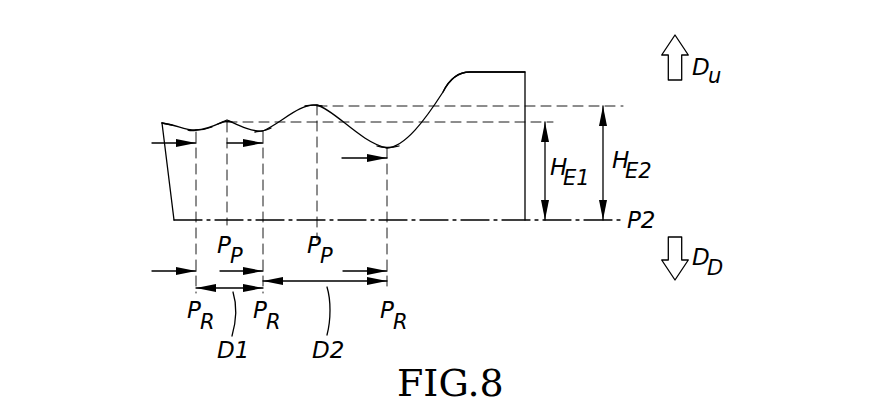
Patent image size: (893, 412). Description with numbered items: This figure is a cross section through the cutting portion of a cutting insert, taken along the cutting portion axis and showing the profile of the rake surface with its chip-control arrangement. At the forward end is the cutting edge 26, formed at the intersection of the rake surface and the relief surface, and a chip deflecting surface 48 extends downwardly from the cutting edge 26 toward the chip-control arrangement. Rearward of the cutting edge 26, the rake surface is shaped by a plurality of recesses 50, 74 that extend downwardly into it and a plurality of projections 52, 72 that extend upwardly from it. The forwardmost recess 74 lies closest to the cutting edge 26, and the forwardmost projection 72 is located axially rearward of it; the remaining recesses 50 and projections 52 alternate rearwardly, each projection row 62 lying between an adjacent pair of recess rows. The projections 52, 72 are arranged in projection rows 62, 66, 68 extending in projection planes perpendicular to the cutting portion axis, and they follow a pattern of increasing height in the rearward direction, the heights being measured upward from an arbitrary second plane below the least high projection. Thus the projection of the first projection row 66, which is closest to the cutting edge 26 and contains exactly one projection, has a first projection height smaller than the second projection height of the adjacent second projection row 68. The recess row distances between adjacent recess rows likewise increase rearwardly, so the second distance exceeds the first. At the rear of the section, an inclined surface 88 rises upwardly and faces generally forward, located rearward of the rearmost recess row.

The cutting edge 26 is at (163, 125).
The chip deflecting surface 48 is at (163, 122).
The recess 50 is at (263, 131).
The forwardmost recess 74 is at (196, 130).
The projection 52 is at (317, 105).
The forwardmost projection 72 is at (227, 121).
The inclined surface 88 is at (441, 92).
The projection row 62 is at (265, 210).
The first projection row 66 is at (227, 200).
The second projection row 68 is at (315, 200).